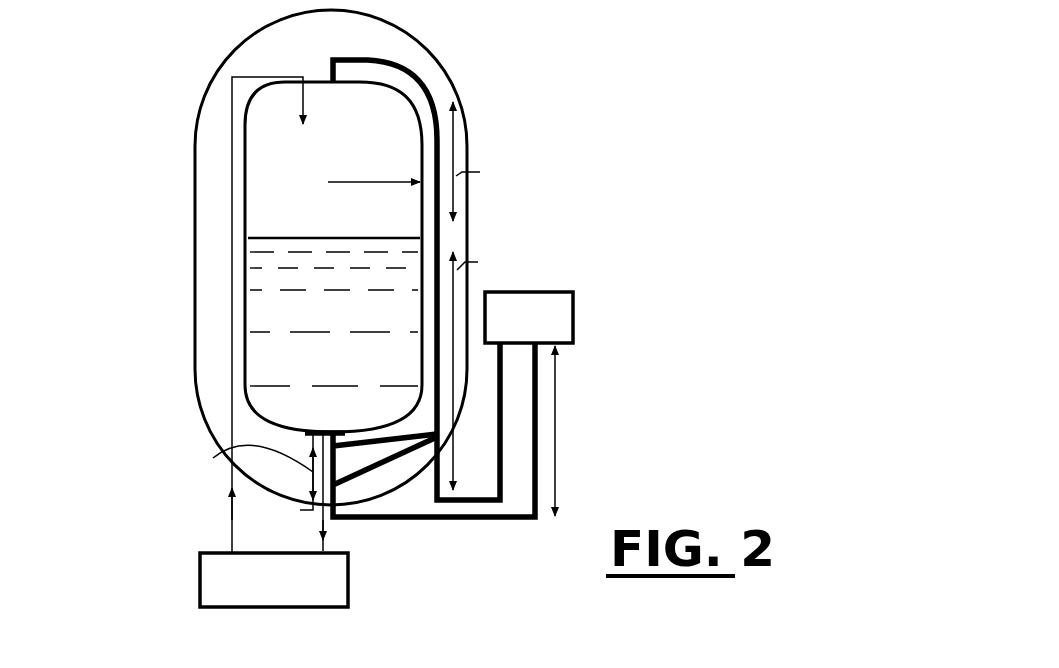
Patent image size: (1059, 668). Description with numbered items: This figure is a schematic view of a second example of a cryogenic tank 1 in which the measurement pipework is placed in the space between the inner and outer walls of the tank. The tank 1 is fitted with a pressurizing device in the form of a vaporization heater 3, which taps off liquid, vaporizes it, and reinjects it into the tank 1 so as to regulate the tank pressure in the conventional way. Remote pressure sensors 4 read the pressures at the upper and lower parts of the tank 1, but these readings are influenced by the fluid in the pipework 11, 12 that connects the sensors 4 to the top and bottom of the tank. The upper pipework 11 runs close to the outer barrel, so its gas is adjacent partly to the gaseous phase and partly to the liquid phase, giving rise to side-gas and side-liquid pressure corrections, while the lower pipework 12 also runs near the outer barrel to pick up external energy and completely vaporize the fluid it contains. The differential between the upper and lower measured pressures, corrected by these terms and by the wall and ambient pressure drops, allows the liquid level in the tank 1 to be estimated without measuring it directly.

The tank 1 is at (153, 412).
The vaporization heater 3 is at (284, 595).
The pressure sensors 4 is at (582, 325).
The upper pipework 11 is at (425, 80).
The lower pipework 12 is at (437, 528).